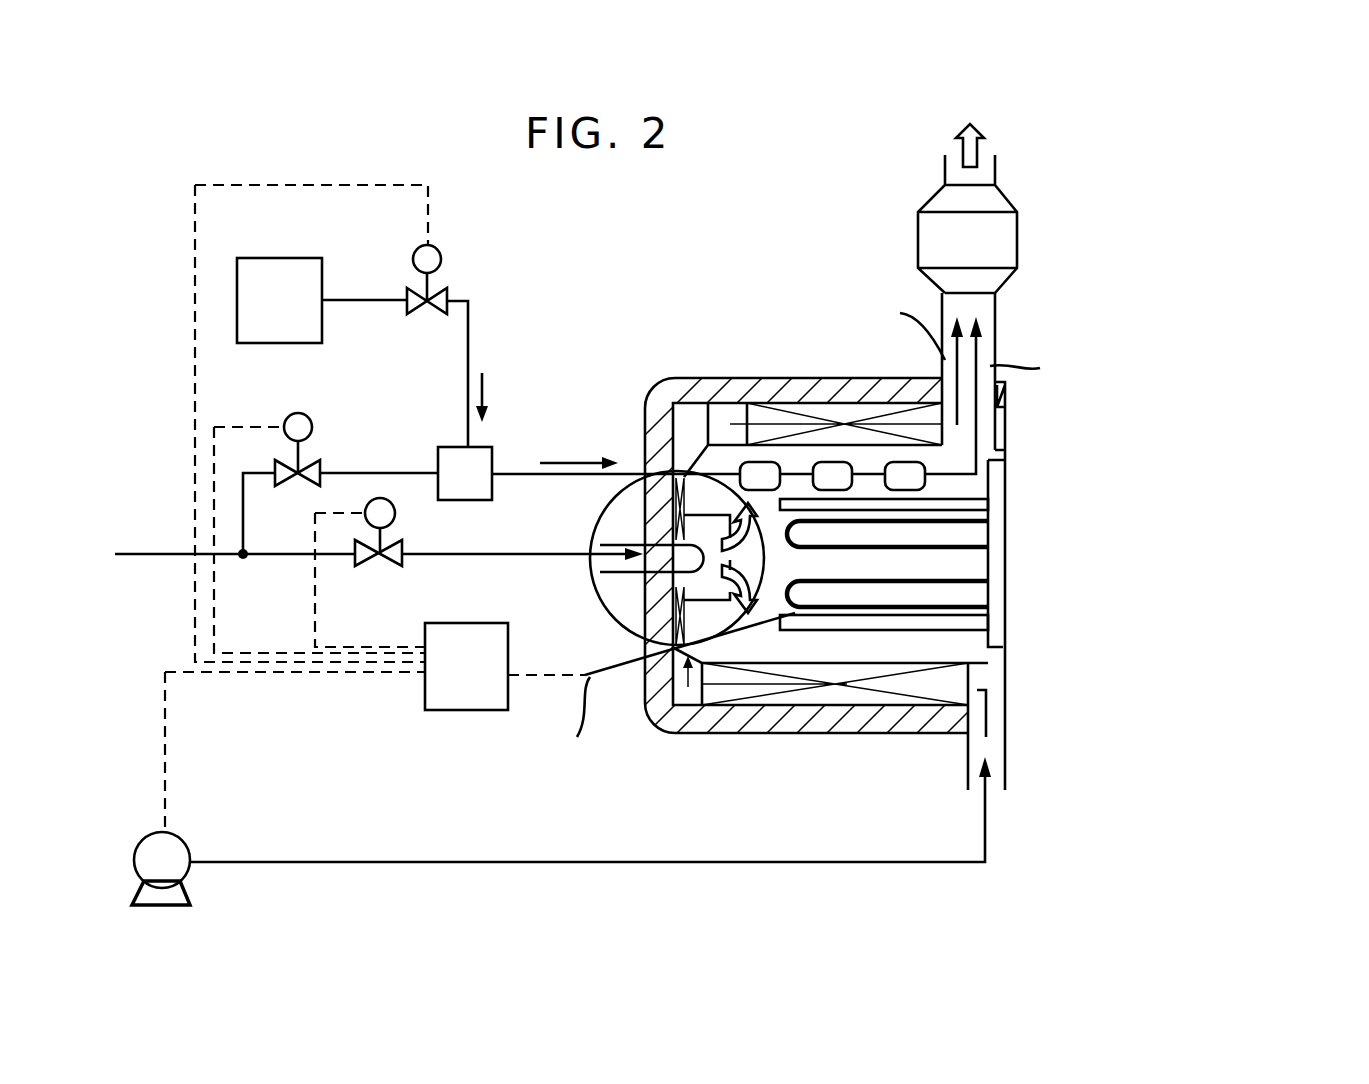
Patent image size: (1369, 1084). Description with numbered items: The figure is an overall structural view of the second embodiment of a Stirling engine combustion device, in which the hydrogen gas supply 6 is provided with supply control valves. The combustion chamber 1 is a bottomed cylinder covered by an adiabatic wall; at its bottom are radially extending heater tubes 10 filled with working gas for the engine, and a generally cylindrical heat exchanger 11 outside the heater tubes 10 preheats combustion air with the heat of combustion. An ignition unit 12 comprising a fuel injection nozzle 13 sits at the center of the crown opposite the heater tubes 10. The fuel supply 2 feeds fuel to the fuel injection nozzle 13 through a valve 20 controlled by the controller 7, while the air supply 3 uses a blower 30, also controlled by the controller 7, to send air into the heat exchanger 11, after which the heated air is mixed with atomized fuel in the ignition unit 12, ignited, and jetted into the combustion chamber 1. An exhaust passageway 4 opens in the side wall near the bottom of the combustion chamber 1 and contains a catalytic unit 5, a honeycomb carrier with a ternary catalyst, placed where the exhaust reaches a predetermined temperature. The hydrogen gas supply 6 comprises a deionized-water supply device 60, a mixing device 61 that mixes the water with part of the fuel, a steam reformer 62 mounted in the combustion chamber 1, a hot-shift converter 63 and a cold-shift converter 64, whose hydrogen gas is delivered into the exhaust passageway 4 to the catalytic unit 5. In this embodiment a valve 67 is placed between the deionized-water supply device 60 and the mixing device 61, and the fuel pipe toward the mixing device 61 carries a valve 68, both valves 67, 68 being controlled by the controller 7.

The combustion chamber 1 is at (865, 733).
The fuel supply 2 is at (153, 558).
The air supply 3 is at (380, 862).
The exhaust passageway 4 is at (982, 310).
The catalytic unit 5 is at (1023, 240).
The hydrogen gas supply 6 is at (505, 470).
The controller 7 is at (462, 637).
The heater tubes 10 is at (968, 600).
The heat exchanger 11 is at (958, 680).
The ignition unit 12 is at (613, 622).
The fuel injection nozzle 13 is at (615, 545).
The valve 20 is at (396, 514).
The blower 30 is at (145, 893).
The deionized-water supply device 60 is at (274, 272).
The mixing device 61 is at (452, 456).
The steam reformer 62 is at (762, 472).
The hot-shift converter 63 is at (833, 472).
The cold-shift converter 64 is at (903, 472).
The valve 67 is at (433, 258).
The valve 68 is at (298, 413).